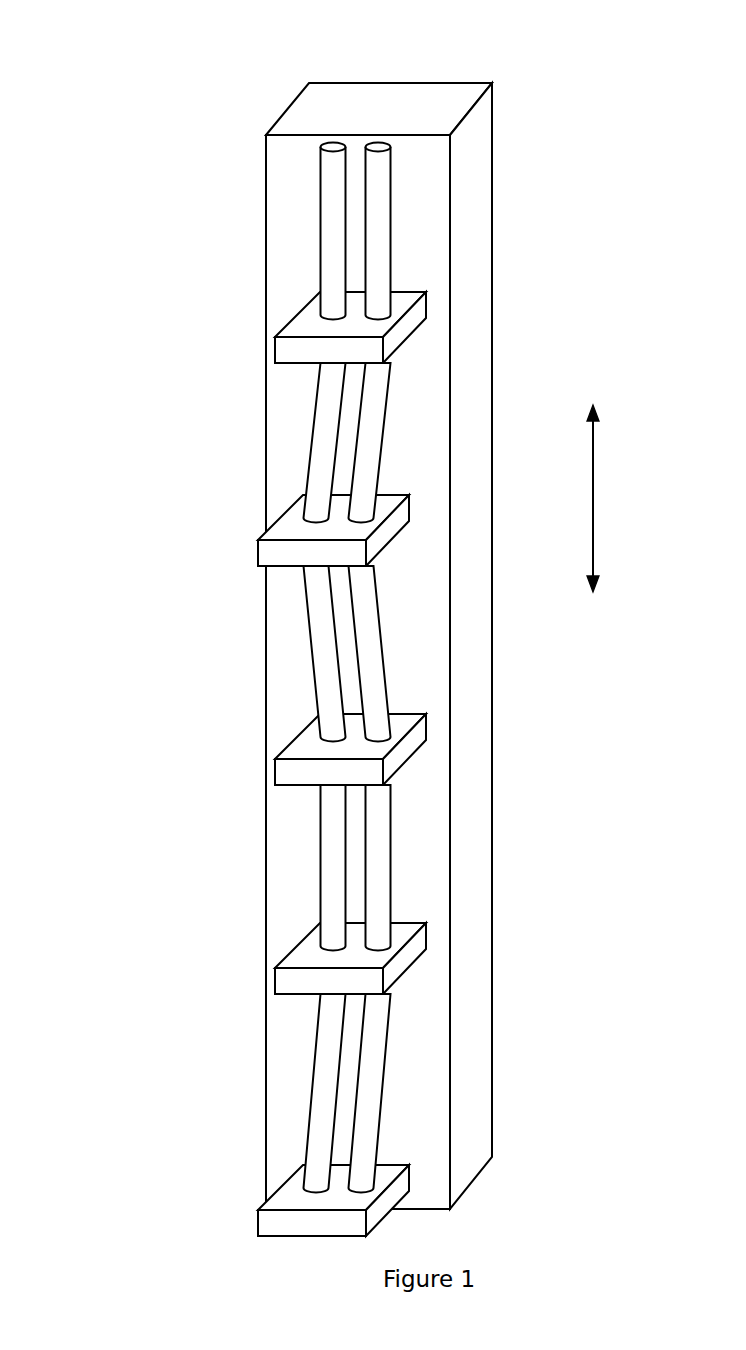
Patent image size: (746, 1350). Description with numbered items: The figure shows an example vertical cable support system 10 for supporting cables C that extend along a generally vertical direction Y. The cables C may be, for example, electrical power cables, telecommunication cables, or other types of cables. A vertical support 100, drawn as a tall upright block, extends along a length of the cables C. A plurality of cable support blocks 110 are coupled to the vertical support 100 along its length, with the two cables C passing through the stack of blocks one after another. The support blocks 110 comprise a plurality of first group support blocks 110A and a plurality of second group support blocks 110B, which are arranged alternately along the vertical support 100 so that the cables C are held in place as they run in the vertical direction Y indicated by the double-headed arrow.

The vertical cable support system 10 is at (109, 136).
The vertical support 100 is at (475, 323).
The cable support blocks 110 is at (403, 257).
The first group support blocks 110A is at (275, 338).
The second group support blocks 110B is at (258, 555).
The cables C is at (337, 127).
The vertical direction Y is at (606, 498).